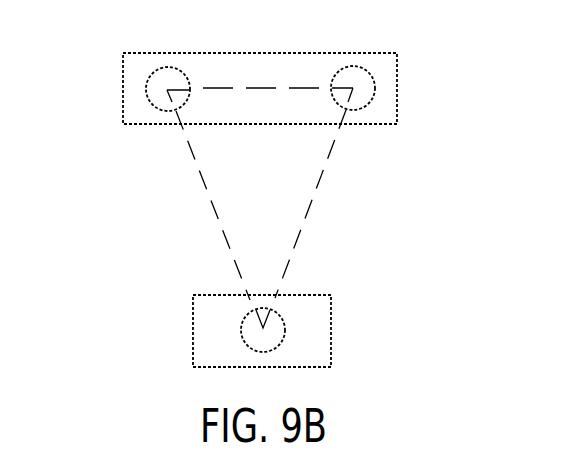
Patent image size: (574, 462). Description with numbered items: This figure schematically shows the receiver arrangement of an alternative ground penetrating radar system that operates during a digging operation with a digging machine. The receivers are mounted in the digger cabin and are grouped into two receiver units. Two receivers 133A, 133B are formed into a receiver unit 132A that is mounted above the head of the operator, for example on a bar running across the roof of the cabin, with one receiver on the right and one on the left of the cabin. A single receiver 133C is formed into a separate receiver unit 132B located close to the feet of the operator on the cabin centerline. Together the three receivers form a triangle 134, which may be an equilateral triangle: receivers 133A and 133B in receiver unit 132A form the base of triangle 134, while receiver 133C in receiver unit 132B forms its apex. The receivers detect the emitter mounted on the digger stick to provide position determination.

The receiver unit 132A is at (272, 52).
The receiver unit 132B is at (303, 293).
The receiver 133A is at (150, 78).
The receiver 133B is at (366, 70).
The receiver 133C is at (241, 338).
The triangle 134 is at (235, 168).